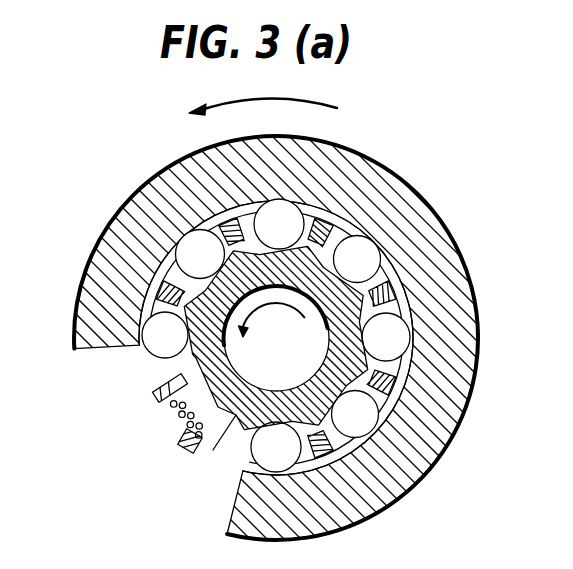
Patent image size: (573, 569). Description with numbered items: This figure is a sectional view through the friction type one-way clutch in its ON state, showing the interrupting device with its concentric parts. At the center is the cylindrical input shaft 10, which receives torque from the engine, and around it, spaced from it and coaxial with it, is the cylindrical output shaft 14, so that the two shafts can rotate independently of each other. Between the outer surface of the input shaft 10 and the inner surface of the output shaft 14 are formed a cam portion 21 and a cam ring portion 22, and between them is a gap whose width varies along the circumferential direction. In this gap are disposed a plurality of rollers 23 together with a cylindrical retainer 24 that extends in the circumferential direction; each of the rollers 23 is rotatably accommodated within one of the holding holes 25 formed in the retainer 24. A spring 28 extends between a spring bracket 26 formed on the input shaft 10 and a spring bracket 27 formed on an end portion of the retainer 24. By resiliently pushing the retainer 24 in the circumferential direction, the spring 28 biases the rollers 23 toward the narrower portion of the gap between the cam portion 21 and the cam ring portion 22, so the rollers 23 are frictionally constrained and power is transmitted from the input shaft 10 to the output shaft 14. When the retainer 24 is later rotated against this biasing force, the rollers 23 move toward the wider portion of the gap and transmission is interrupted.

The input shaft 10 is at (382, 387).
The output shaft 14 is at (466, 262).
The cam portion 21 is at (322, 272).
The cam ring portion 22 is at (183, 174).
The rollers 23 is at (195, 248).
The retainer 24 is at (163, 283).
The holding holes 25 is at (303, 225).
The spring bracket 26 is at (192, 460).
The spring bracket 27 is at (155, 391).
The spring 28 is at (170, 430).